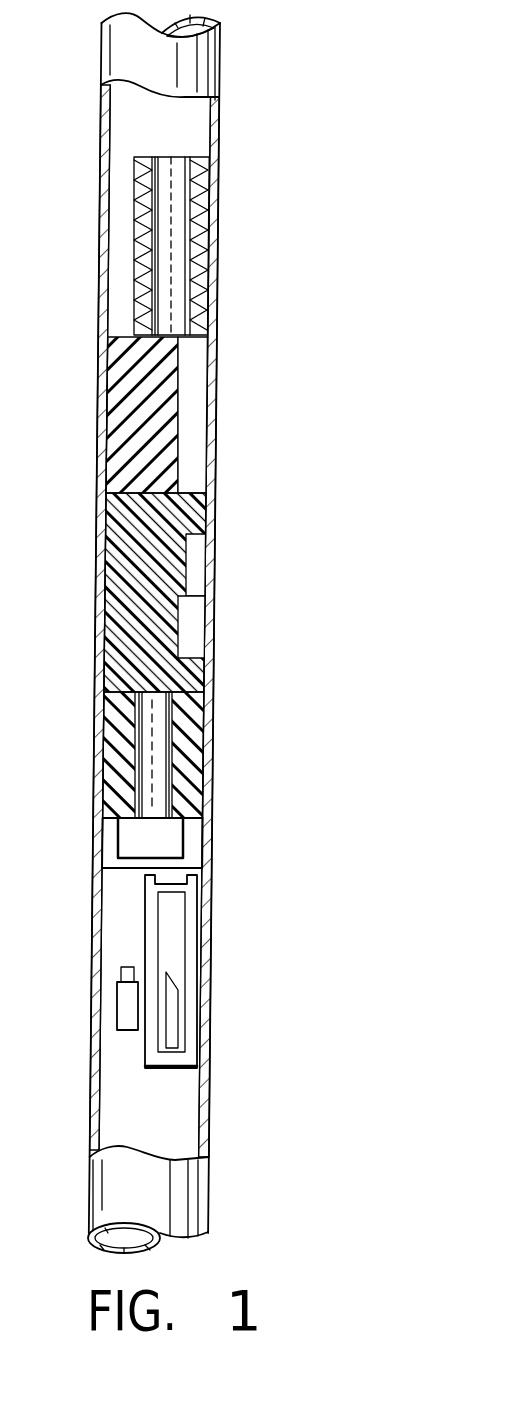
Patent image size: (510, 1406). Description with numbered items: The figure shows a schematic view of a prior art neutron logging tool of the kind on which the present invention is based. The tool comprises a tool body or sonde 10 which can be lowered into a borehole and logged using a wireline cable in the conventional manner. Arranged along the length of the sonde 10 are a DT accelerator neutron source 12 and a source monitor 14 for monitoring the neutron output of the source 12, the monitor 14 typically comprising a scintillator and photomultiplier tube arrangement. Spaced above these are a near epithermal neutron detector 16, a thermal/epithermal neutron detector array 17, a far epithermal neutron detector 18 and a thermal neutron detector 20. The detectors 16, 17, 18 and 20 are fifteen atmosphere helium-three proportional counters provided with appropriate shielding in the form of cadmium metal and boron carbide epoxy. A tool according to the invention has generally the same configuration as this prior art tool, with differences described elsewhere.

The sonde 10 is at (213, 128).
The DT accelerator neutron source 12 is at (183, 970).
The source monitor 14 is at (117, 1002).
The near epithermal neutron detector 16 is at (150, 777).
The thermal/epithermal neutron detector array 17 is at (228, 530).
The far epithermal neutron detector 18 is at (192, 389).
The thermal neutron detector 20 is at (198, 196).